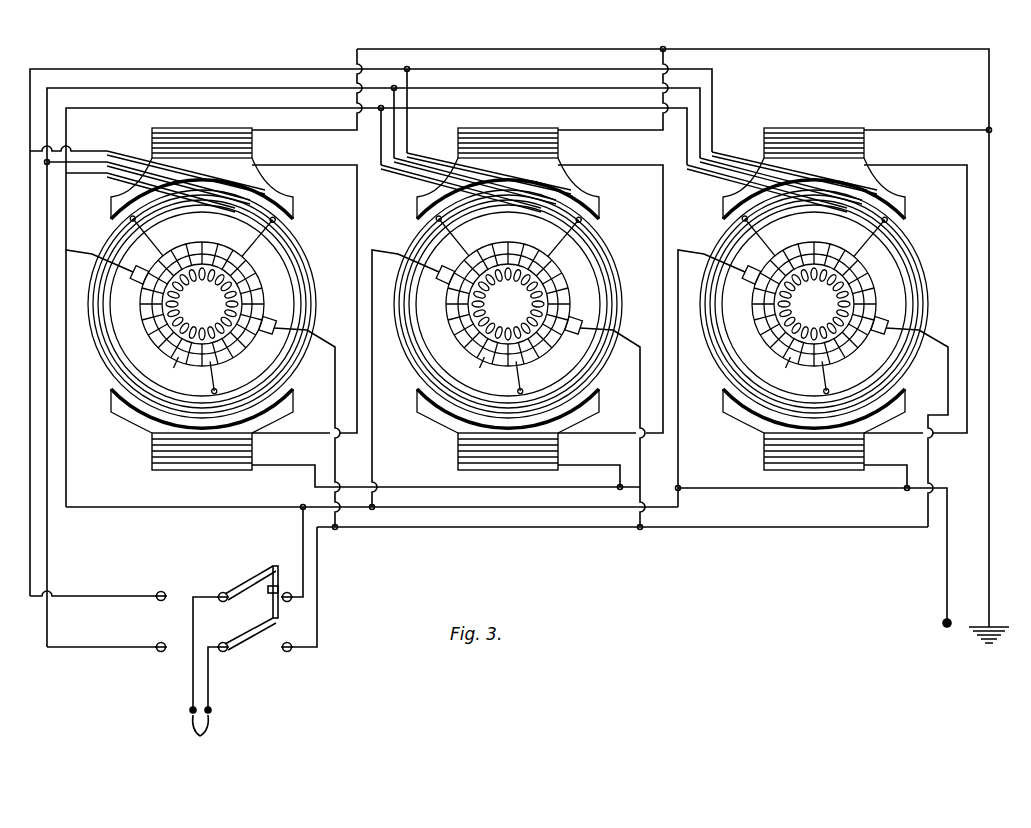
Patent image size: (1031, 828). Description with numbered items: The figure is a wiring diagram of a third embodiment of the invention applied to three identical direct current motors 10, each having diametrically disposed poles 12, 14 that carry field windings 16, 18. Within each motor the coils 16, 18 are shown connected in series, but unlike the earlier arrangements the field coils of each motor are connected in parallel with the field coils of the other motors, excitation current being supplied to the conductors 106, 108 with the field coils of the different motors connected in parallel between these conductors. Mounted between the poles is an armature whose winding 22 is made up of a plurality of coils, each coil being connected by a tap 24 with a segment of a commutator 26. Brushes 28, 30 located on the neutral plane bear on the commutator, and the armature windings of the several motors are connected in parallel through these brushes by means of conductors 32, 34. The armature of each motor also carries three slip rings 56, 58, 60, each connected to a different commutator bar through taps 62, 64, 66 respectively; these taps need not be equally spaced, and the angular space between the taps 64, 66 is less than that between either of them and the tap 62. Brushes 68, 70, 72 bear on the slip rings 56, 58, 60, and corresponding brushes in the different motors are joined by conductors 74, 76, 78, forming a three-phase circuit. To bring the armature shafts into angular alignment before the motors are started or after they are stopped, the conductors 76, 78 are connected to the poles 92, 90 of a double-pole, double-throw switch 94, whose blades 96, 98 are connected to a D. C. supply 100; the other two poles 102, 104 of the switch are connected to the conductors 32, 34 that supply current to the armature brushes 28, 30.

The direct current electric motor 10 is at (326, 219).
The pole 12 is at (278, 196).
The pole 14 is at (283, 406).
The field winding 16 is at (254, 150).
The field winding 18 is at (130, 418).
The armature winding 22 is at (508, 304).
The tap 24 is at (190, 244).
The commutator 26 is at (178, 360).
The brush 28 is at (134, 282).
The brush 30 is at (276, 320).
The conductor 32 is at (68, 480).
The conductor 34 is at (314, 452).
The slip ring 56 is at (272, 248).
The slip ring 58 is at (304, 268).
The slip ring 60 is at (298, 246).
The tap 62 is at (215, 375).
The tap 64 is at (246, 242).
The tap 66 is at (152, 238).
The brush 68 is at (108, 178).
The brush 70 is at (112, 160).
The brush 72 is at (185, 175).
The conductor 74 is at (100, 112).
The conductor 76 is at (118, 69).
The conductor 78 is at (237, 86).
The pole 90 is at (162, 591).
The pole 92 is at (159, 652).
The double-pole, double-throw switch 94 is at (276, 566).
The blade 96 is at (232, 584).
The blade 98 is at (232, 636).
The D. C. supply 100 is at (200, 675).
The pole 102 is at (288, 602).
The pole 104 is at (288, 652).
The conductor 106 is at (442, 487).
The conductor 108 is at (512, 49).